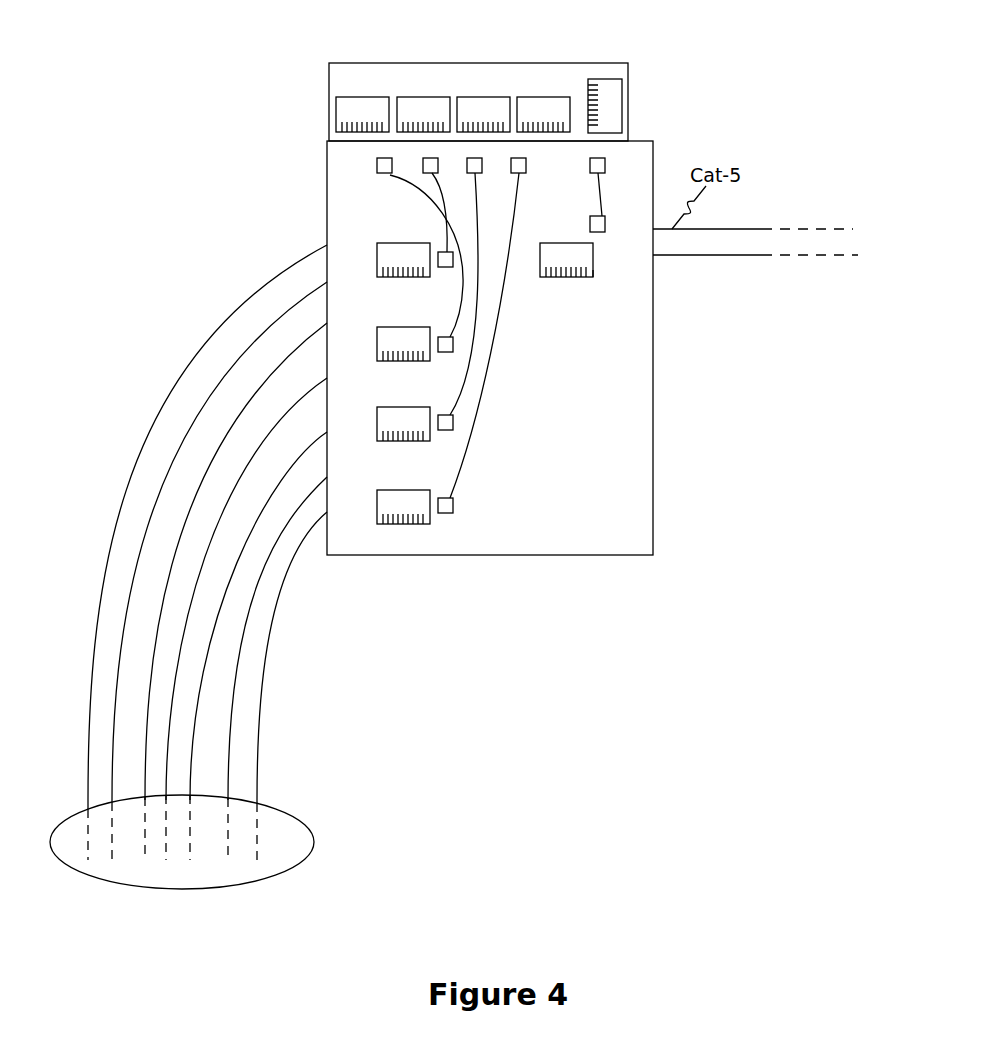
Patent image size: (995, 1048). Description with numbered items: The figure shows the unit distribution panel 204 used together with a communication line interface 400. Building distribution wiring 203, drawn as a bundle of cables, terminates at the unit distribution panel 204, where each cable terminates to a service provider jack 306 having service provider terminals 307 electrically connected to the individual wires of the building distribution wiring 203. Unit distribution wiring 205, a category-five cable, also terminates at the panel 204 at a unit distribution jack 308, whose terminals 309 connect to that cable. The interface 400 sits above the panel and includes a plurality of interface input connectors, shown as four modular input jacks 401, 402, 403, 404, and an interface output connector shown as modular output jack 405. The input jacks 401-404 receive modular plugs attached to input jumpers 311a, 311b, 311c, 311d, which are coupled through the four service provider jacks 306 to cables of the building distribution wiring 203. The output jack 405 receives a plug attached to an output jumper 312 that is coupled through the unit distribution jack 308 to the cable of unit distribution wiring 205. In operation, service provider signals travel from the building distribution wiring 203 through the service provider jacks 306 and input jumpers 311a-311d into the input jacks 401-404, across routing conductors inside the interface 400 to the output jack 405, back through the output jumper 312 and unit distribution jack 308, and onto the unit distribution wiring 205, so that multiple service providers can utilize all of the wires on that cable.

The building distribution wiring 203 is at (298, 822).
The unit distribution panel 204 is at (653, 158).
The unit distribution wiring 205 is at (788, 229).
The service provider jack 306 is at (377, 257).
The service provider terminals 307 is at (377, 275).
The unit distribution jack 308 is at (593, 255).
The uplink port connection 309 is at (593, 270).
The input jumper 311a is at (420, 190).
The input jumper 311b is at (462, 295).
The input jumper 311c is at (468, 372).
The input jumper 311d is at (472, 452).
The output jumper 312 is at (600, 190).
The communication line interface 400 is at (628, 107).
The interface input jack 401 is at (352, 97).
The interface input jack 402 is at (413, 97).
The interface input jack 403 is at (473, 97).
The interface input jack 404 is at (533, 97).
The interface output jack 405 is at (600, 79).